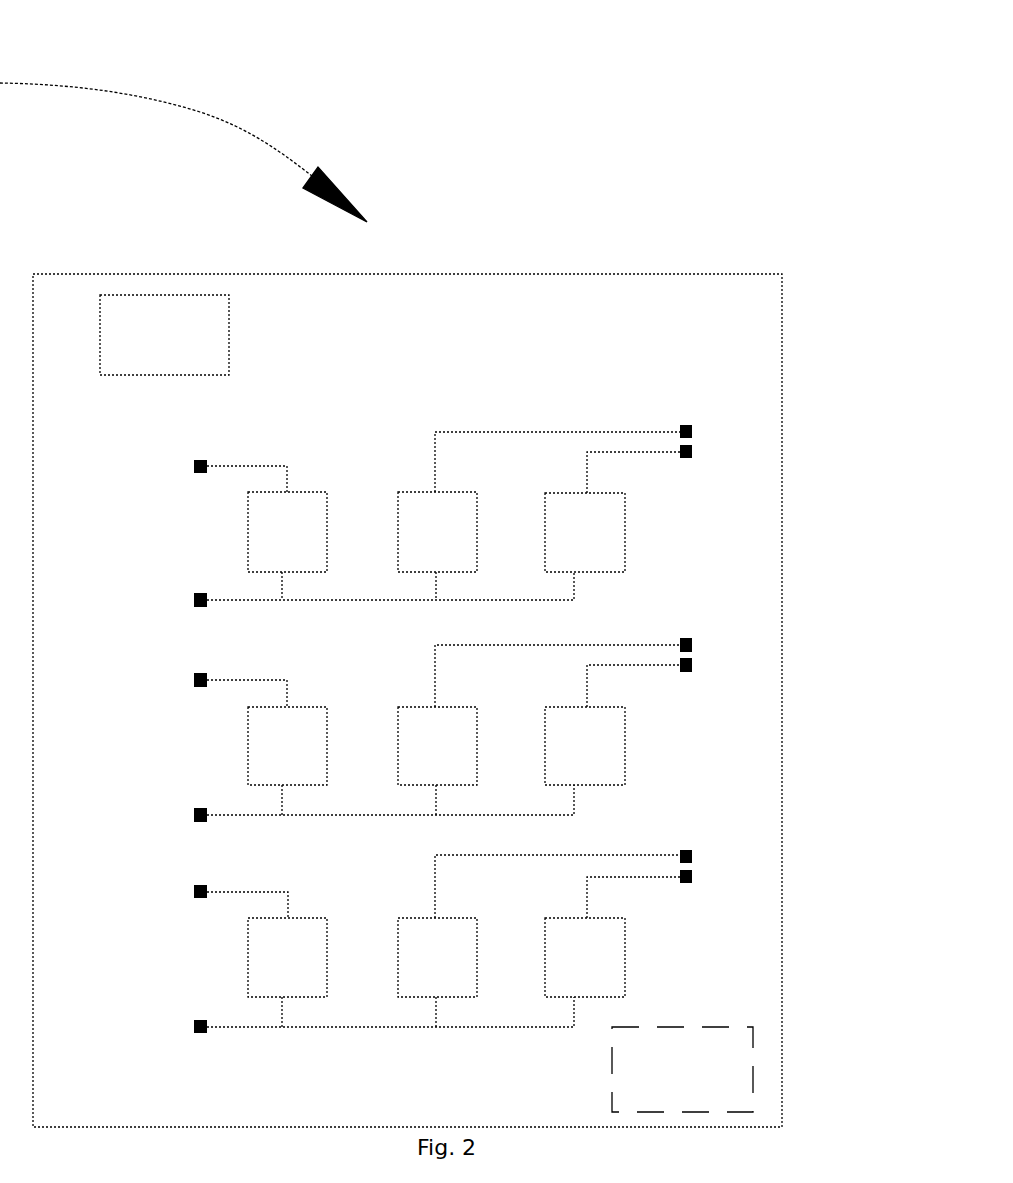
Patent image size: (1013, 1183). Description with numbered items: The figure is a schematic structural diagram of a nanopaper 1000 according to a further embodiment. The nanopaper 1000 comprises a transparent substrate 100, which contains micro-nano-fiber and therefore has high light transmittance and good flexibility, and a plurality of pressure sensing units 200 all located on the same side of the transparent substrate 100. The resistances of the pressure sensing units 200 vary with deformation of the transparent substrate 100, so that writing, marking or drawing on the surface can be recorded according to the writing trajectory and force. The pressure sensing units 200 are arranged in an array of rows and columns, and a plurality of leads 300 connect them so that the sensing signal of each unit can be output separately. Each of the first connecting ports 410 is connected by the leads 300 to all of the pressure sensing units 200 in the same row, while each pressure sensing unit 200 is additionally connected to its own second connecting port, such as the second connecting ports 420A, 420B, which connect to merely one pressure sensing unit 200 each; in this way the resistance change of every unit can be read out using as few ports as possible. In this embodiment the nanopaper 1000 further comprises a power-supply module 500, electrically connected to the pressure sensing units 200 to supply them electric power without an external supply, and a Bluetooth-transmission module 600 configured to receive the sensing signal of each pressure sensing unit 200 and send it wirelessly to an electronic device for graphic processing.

The nanopaper 1000 is at (183, 116).
The transparent substrate 100 is at (575, 273).
The pressure sensing units 200 is at (436, 744).
The leads 300 is at (233, 466).
The first connecting ports 410 is at (194, 598).
The second connecting port 420A is at (692, 428).
The second connecting port 420B is at (692, 450).
The power-supply module 500 is at (164, 335).
The Bluetooth-transmission module 600 is at (682, 1069).